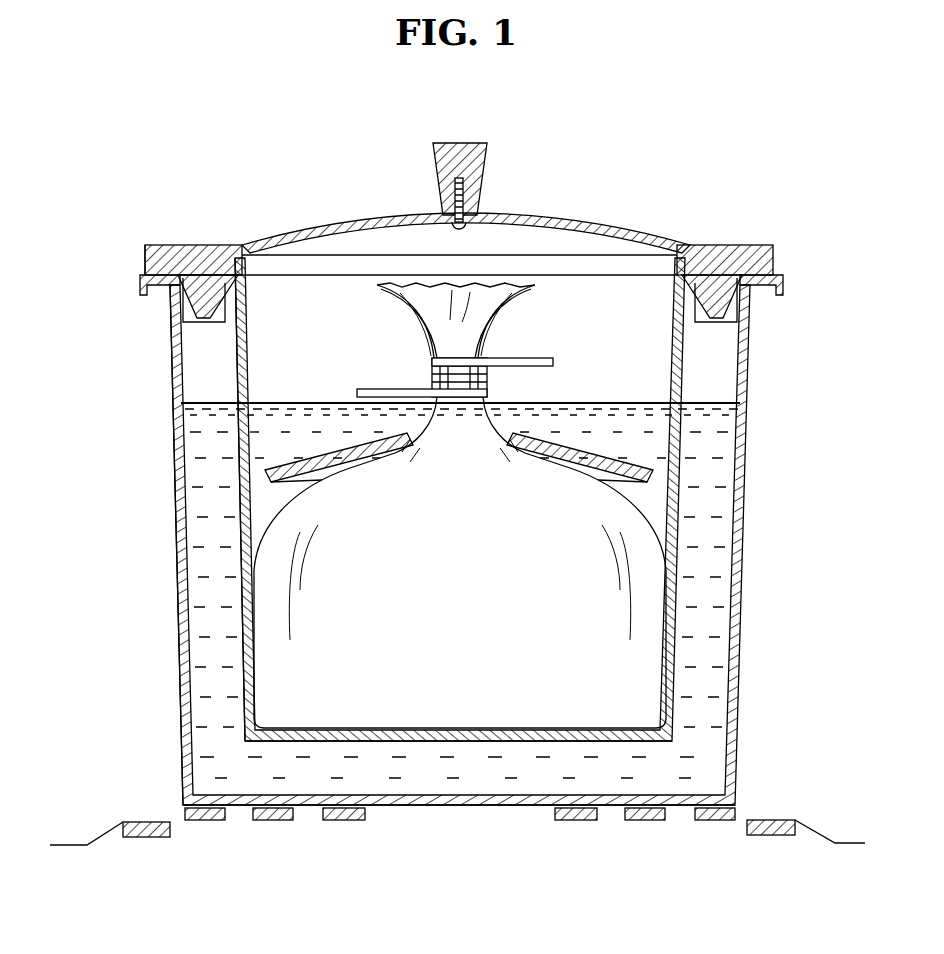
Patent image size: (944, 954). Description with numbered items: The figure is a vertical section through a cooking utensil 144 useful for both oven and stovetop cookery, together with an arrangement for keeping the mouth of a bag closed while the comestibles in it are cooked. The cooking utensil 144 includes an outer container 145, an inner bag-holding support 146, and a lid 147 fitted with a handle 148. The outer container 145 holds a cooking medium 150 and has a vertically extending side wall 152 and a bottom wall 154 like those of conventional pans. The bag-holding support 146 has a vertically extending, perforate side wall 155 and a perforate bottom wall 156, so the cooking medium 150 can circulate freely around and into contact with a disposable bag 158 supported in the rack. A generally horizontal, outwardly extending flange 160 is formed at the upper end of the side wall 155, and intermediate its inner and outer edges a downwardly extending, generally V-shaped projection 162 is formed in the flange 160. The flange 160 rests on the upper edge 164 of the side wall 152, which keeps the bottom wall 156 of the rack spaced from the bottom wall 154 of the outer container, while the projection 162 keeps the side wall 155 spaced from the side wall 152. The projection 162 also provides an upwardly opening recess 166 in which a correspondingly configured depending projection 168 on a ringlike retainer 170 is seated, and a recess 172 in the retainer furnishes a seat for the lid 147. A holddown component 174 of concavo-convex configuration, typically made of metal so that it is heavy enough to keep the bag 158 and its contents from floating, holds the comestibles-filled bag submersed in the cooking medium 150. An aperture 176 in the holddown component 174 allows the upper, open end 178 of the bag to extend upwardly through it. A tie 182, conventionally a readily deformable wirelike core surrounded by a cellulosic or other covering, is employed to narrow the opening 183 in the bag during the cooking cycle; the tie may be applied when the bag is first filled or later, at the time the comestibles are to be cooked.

The cooking utensil 144 is at (386, 200).
The outer container 145 is at (176, 549).
The bag-holding support 146 is at (692, 463).
The lid 147 is at (598, 220).
The handle 148 is at (488, 158).
The cooking medium 150 is at (717, 410).
The side wall 152 is at (743, 566).
The bottom wall 154 is at (492, 806).
The side wall 155 is at (238, 406).
The bottom wall 156 is at (530, 743).
The disposable bag 158 is at (278, 632).
The flange 160 is at (158, 263).
The projection 162 is at (242, 304).
The upper edge 164 is at (760, 264).
The recess 166 is at (198, 273).
The depending projection 168 is at (205, 317).
The ringlike retainer 170 is at (168, 259).
The recess 172 is at (690, 258).
The holddown component 174 is at (318, 452).
The aperture 176 is at (508, 433).
The upper open end 178 is at (529, 287).
The tie 182 is at (402, 388).
The opening 183 is at (450, 290).